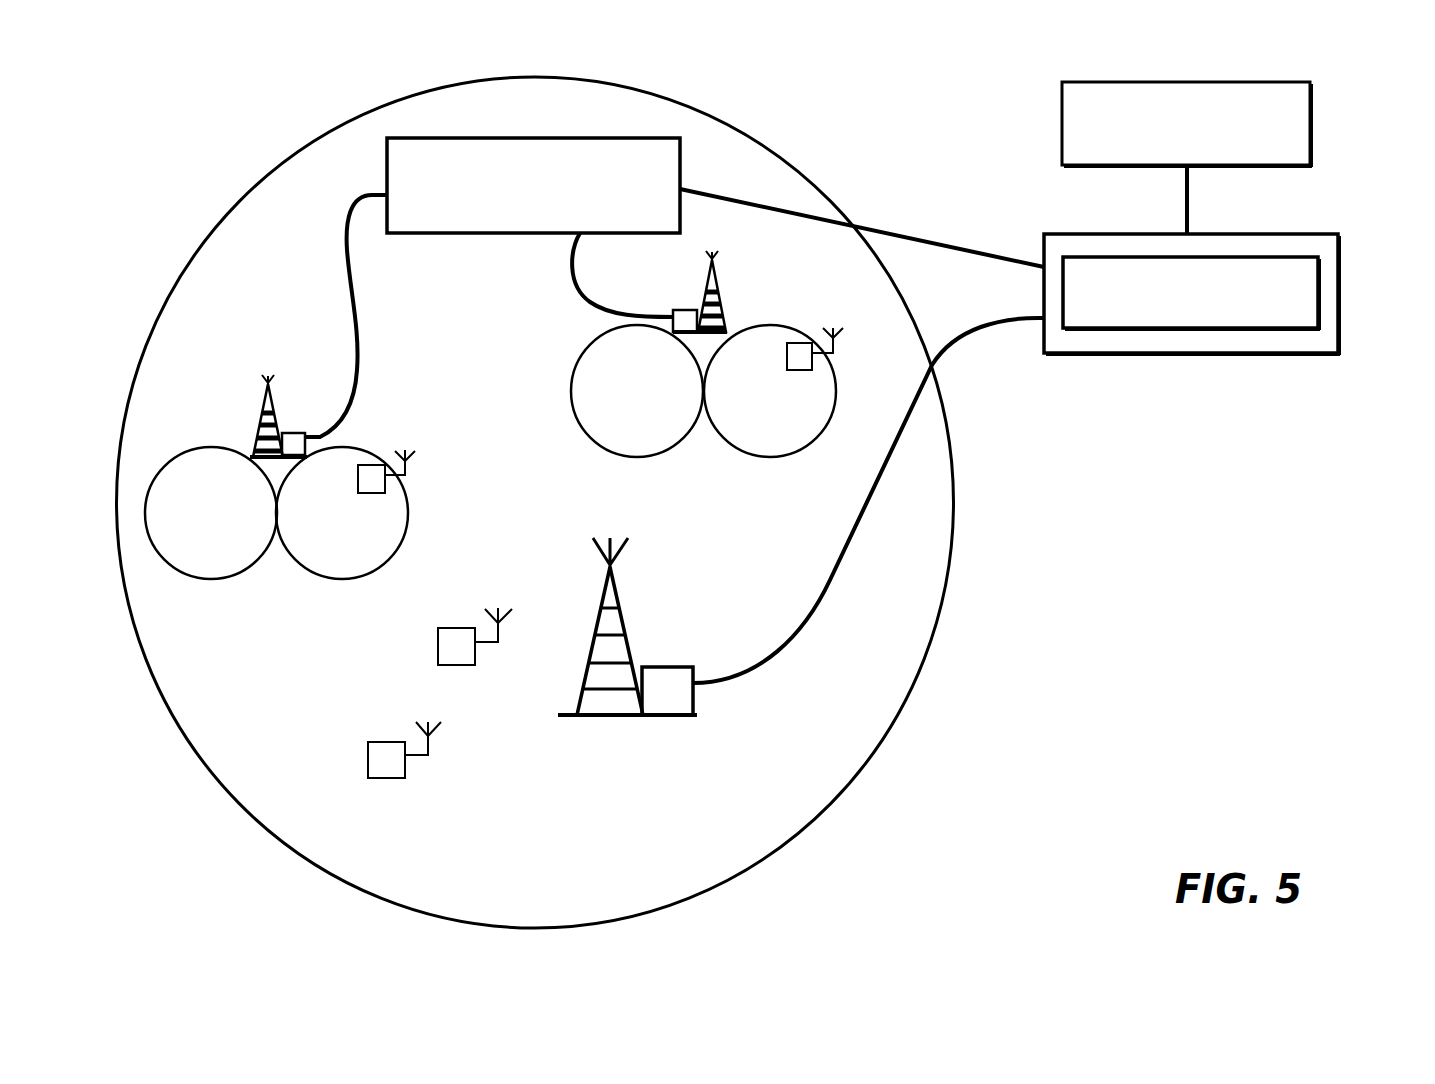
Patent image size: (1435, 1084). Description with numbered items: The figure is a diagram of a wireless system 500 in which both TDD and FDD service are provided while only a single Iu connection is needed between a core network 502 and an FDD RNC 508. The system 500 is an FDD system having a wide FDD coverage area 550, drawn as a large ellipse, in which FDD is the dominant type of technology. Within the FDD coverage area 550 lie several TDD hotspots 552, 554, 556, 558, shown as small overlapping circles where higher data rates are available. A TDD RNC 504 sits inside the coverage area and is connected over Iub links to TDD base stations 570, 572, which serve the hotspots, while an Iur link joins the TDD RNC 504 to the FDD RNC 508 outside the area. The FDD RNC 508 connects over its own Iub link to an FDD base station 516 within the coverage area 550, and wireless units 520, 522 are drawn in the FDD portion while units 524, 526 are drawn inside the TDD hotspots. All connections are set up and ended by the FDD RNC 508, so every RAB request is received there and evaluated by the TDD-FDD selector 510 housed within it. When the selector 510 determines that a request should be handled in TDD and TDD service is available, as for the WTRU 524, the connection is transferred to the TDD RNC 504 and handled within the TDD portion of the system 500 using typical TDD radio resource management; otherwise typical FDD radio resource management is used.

The system 500 is at (158, 74).
The core network 502 is at (1062, 103).
The TDD RNC 504 is at (553, 138).
The FDD RNC 508 is at (1236, 309).
The TDD-FDD selector 510 is at (1318, 287).
The FDD base station 516 is at (628, 716).
The FDD user equipment 520 is at (468, 665).
The FDD user equipment 522 is at (400, 778).
The WTRU 524 is at (812, 368).
The TDD user equipment 526 is at (385, 493).
The FDD coverage area 550 is at (887, 740).
The TDD hotspot 552 is at (218, 579).
The TDD hotspot 554 is at (336, 579).
The TDD hotspot 556 is at (602, 450).
The TDD hotspot 558 is at (797, 453).
The base station 570 is at (263, 417).
The base station 572 is at (718, 292).